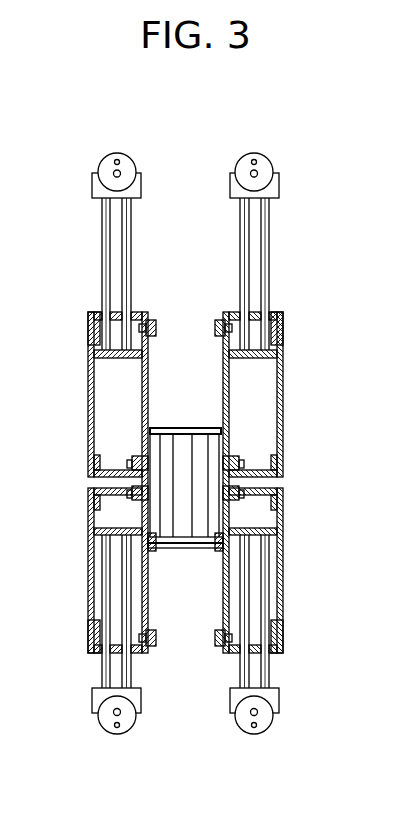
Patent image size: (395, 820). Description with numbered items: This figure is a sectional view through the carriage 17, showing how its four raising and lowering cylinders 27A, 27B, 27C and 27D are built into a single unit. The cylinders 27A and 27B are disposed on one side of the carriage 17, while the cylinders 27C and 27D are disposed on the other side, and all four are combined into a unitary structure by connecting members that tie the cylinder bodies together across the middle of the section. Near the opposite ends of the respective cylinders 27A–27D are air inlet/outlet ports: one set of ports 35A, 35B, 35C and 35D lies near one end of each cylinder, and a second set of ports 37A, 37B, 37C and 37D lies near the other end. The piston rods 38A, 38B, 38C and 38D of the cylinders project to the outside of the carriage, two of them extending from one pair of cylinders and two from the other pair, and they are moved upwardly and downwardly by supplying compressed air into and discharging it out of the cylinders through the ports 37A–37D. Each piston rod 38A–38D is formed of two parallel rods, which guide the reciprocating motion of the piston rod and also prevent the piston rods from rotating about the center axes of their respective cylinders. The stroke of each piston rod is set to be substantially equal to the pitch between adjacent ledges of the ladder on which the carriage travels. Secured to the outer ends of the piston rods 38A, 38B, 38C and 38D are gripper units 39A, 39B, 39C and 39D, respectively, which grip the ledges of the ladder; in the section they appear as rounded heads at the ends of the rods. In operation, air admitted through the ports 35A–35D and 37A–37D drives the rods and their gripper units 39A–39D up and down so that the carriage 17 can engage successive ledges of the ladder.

The carriage 17 is at (285, 331).
The raising and lowering cylinder 27A is at (90, 382).
The raising and lowering cylinder 27B is at (284, 387).
The raising and lowering cylinder 27C is at (90, 561).
The raising and lowering cylinder 27D is at (284, 561).
The air inlet/outlet port 35A is at (152, 324).
The air inlet/outlet port 35B is at (222, 322).
The air inlet/outlet port 35C is at (152, 648).
The air inlet/outlet port 35D is at (222, 648).
The air inlet/outlet port 37A is at (140, 460).
The air inlet/outlet port 37B is at (232, 460).
The air inlet/outlet port 37C is at (140, 486).
The air inlet/outlet port 37D is at (250, 489).
The piston rod 38A is at (102, 247).
The piston rod 38B is at (269, 251).
The piston rod 38C is at (102, 673).
The piston rod 38D is at (269, 672).
The gripper unit 39A is at (110, 163).
The gripper unit 39B is at (262, 163).
The gripper unit 39C is at (108, 728).
The gripper unit 39D is at (264, 726).